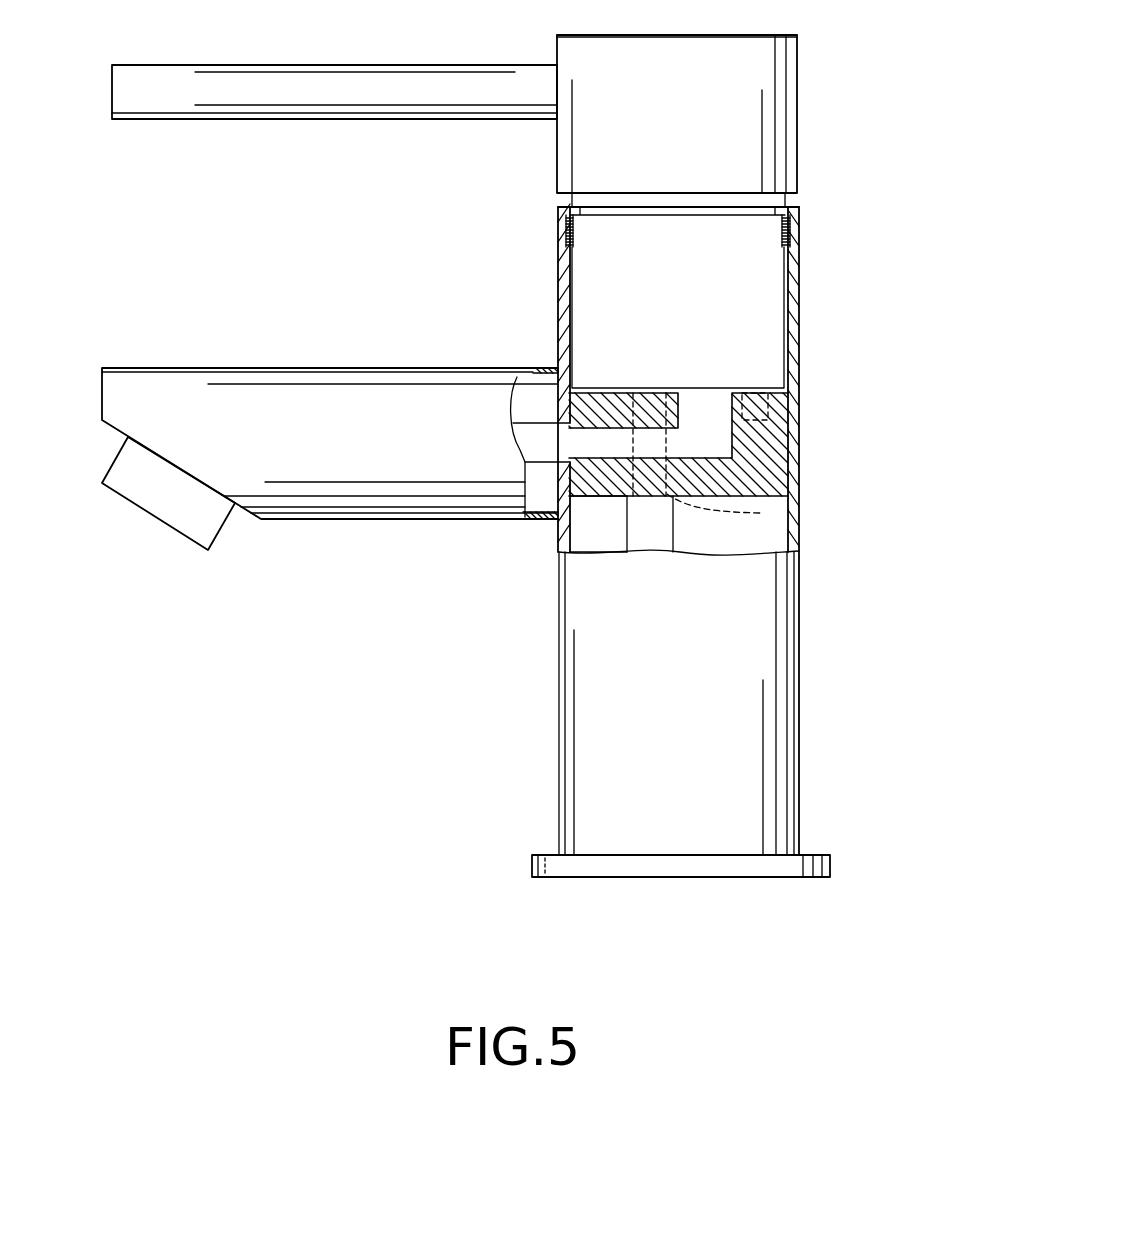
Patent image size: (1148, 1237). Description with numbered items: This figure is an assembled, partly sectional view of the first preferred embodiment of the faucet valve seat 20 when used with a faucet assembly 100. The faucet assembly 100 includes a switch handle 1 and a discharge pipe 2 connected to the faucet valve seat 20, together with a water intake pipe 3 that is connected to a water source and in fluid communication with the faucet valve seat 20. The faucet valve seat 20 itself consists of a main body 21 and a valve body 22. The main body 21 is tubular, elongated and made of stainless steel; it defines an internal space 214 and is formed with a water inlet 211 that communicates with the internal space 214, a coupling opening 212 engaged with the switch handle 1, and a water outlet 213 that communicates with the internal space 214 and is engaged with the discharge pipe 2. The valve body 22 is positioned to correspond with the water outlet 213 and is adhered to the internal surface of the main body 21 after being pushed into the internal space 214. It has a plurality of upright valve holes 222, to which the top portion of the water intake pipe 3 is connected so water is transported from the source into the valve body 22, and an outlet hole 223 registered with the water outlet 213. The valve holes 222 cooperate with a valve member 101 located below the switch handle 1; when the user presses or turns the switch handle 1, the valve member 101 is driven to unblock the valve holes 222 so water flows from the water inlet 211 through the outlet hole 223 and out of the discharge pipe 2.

The switch handle 1 is at (782, 118).
The discharge pipe 2 is at (307, 377).
The water intake pipe 3 is at (643, 541).
The faucet valve seat 20 is at (817, 690).
The main body 21 is at (800, 773).
The valve body 22 is at (772, 470).
The faucet assembly 100 is at (830, 626).
The valve member 101 is at (778, 284).
The water inlet 211 is at (680, 877).
The coupling opening 212 is at (791, 255).
The water outlet 213 is at (557, 390).
The internal space 214 is at (570, 504).
The valve holes 222 is at (760, 513).
The outlet hole 223 is at (600, 541).